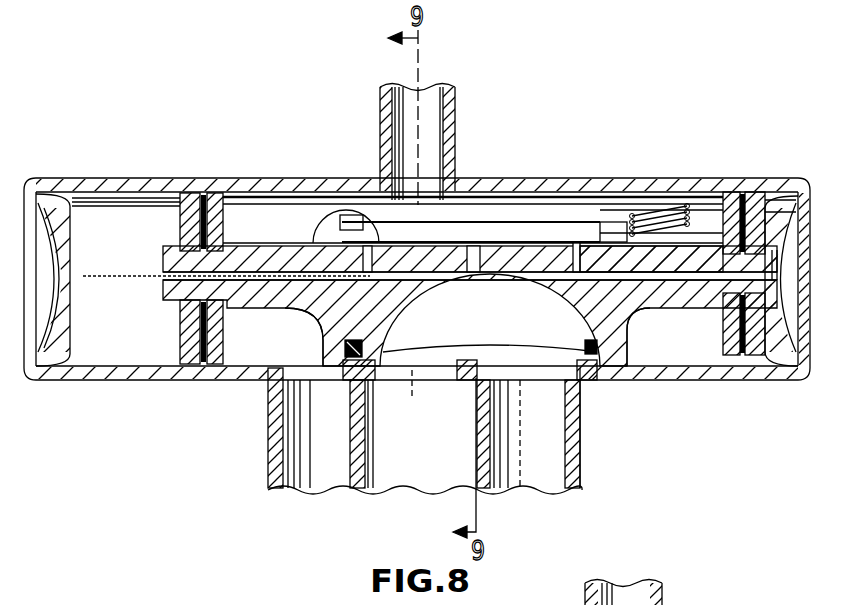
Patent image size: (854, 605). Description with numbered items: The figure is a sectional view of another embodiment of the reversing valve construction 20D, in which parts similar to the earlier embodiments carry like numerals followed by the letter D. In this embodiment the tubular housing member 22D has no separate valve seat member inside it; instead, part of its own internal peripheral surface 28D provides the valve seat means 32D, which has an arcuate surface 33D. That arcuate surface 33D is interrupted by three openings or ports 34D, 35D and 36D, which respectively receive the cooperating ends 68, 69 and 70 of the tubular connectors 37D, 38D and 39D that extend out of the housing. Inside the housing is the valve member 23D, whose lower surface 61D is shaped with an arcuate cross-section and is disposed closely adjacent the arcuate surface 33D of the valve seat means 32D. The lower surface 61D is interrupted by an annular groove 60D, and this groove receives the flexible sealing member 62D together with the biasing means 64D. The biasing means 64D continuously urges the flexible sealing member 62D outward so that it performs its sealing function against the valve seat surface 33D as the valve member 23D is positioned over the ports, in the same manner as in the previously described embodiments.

The reversing valve construction 20D is at (640, 108).
The tubular housing member 22D is at (133, 178).
The valve member 23D is at (500, 245).
The internal peripheral surface 28D is at (688, 364).
The valve seat means 32D is at (583, 372).
The arcuate surface 33D is at (470, 366).
The opening or port 34D is at (282, 395).
The opening or port 35D is at (387, 380).
The opening or port 36D is at (578, 370).
The tubular connector 37D is at (268, 458).
The tubular connector 38D is at (377, 478).
The tubular connector 39D is at (580, 477).
The annular groove 60D is at (628, 330).
The lower surface 61D is at (636, 352).
The flexible sealing member 62D is at (473, 203).
The biasing means 64D is at (612, 350).
The cooperating end 68 is at (288, 372).
The cooperating end 69 is at (380, 356).
The cooperating end 70 is at (482, 372).